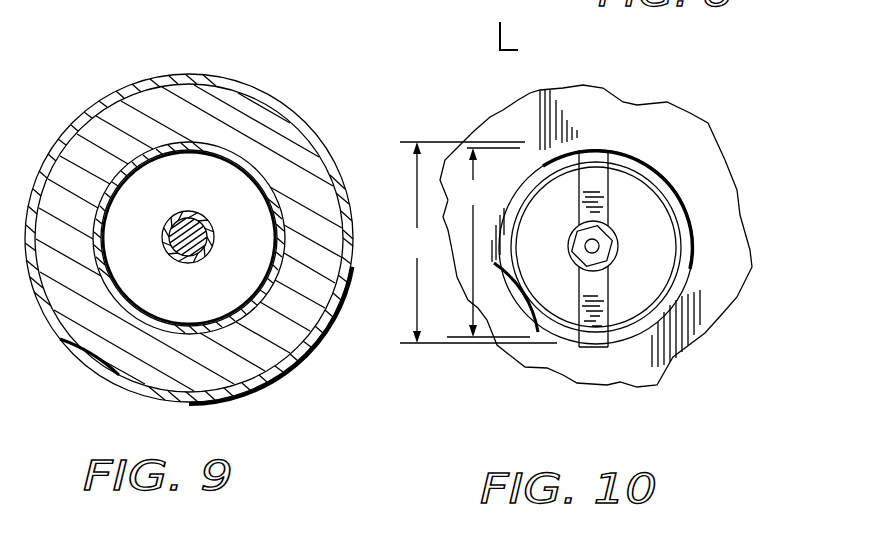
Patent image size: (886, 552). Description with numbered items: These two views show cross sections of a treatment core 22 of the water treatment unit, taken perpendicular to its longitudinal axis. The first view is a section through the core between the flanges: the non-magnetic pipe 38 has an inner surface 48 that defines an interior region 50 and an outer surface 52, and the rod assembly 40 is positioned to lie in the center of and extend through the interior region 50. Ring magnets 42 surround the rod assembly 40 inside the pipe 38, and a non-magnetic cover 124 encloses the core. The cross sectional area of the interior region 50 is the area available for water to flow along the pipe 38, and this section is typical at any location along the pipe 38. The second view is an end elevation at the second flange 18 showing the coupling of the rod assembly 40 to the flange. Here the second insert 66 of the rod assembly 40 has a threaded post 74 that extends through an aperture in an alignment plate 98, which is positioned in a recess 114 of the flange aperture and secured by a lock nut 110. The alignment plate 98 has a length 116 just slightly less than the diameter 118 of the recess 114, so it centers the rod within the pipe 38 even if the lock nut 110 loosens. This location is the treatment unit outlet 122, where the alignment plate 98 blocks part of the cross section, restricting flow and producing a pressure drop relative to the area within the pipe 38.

In FIG. 10, the second flange 18 is at (683, 150).
In FIG. 9, the treatment core 22 is at (189, 218).
In FIG. 10, the treatment core 22 is at (618, 224).
In FIG. 9, the pipe 38 is at (237, 313).
In FIG. 9, the rod assembly 40 is at (190, 278).
In FIG. 9, the ring magnets 42 is at (98, 133).
In FIG. 9, the inner surface 48 is at (143, 160).
In FIG. 9, the interior region 50 is at (222, 193).
In FIG. 9, the outer surface 52 is at (115, 300).
In FIG. 10, the second insert 66 is at (598, 253).
In FIG. 10, the threaded post 74 is at (598, 246).
In FIG. 10, the alignment plate 98 is at (602, 182).
In FIG. 10, the lock nut 110 is at (577, 235).
In FIG. 10, the recess 114 is at (633, 299).
In FIG. 10, the length 116 is at (488, 242).
In FIG. 10, the diameter 118 is at (475, 242).
In FIG. 10, the outlet 122 is at (614, 138).
In FIG. 9, the cover 124 is at (260, 97).